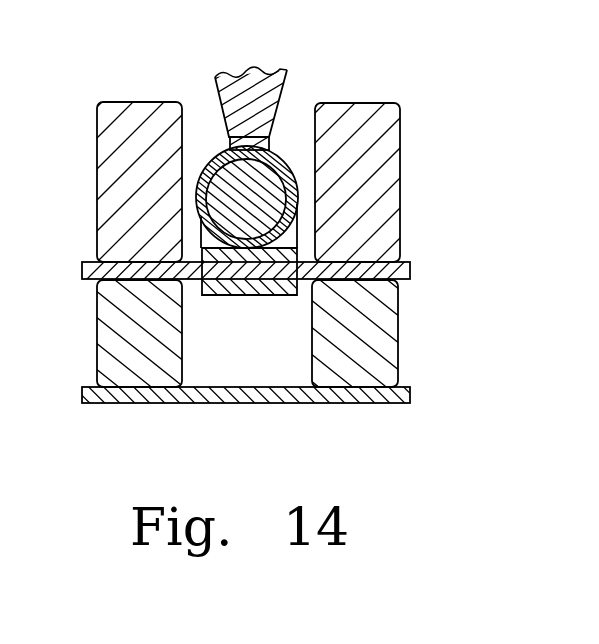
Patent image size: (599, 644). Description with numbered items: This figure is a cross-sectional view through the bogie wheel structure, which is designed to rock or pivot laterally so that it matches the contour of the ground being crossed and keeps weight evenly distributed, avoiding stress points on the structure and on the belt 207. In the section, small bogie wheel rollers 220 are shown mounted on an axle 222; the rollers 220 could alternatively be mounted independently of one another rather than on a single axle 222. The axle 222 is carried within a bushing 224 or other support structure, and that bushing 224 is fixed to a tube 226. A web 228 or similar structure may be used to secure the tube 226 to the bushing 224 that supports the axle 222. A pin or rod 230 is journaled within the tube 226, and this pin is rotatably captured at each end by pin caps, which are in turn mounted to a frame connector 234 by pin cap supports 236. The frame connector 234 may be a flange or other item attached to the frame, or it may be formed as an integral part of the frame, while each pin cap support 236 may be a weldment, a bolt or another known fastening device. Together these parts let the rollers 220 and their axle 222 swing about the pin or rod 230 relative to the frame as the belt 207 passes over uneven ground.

The belt 207 is at (292, 405).
The bogie wheel rollers 220 is at (100, 103).
The axle 222 is at (412, 270).
The bushing 224 is at (228, 297).
The tube 226 is at (295, 194).
The web 228 is at (200, 243).
The pin or rod 230 is at (228, 178).
The frame connector 234 is at (252, 75).
The pin cap support 236 is at (272, 143).